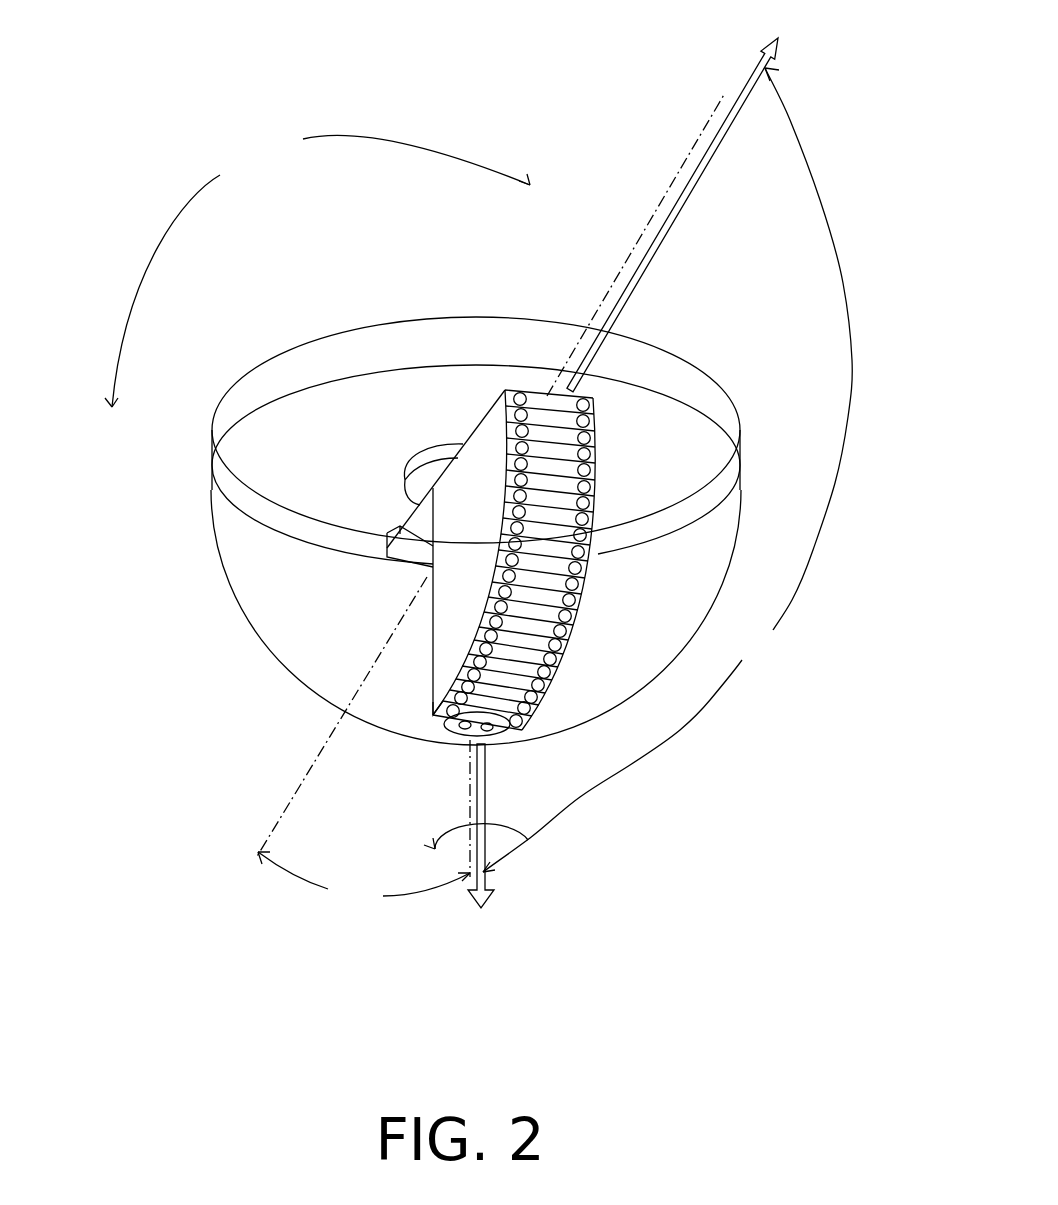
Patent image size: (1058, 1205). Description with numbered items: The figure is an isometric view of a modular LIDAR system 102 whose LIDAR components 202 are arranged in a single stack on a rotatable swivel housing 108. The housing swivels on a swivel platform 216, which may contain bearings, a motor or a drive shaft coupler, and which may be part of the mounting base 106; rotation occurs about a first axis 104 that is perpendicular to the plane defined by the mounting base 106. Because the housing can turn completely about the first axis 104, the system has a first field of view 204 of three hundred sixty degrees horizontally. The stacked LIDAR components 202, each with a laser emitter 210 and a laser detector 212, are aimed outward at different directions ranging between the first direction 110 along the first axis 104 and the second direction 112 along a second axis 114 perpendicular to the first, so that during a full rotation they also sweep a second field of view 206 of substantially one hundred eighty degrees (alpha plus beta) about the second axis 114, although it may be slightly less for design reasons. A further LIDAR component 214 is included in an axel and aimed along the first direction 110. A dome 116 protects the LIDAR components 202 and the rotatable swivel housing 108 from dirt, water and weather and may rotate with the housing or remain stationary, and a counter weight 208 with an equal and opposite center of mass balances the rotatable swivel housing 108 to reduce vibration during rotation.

The modular LIDAR system 102 is at (288, 913).
The first axis 104 is at (470, 857).
The mounting base 106 is at (317, 337).
The rotatable swivel housing 108 is at (472, 435).
The first direction 110 is at (490, 887).
The second direction 112 is at (747, 75).
The second axis 114 is at (663, 195).
The dome 116 is at (215, 550).
The LIDAR components 202 is at (547, 485).
The first field of view 204 is at (345, 135).
The second field of view 206 is at (423, 890).
The counter weight 208 is at (400, 553).
The laser emitter 210 is at (468, 645).
The laser detector 212 is at (540, 645).
The LIDAR component 214 is at (460, 737).
The swivel platform 216 is at (405, 480).